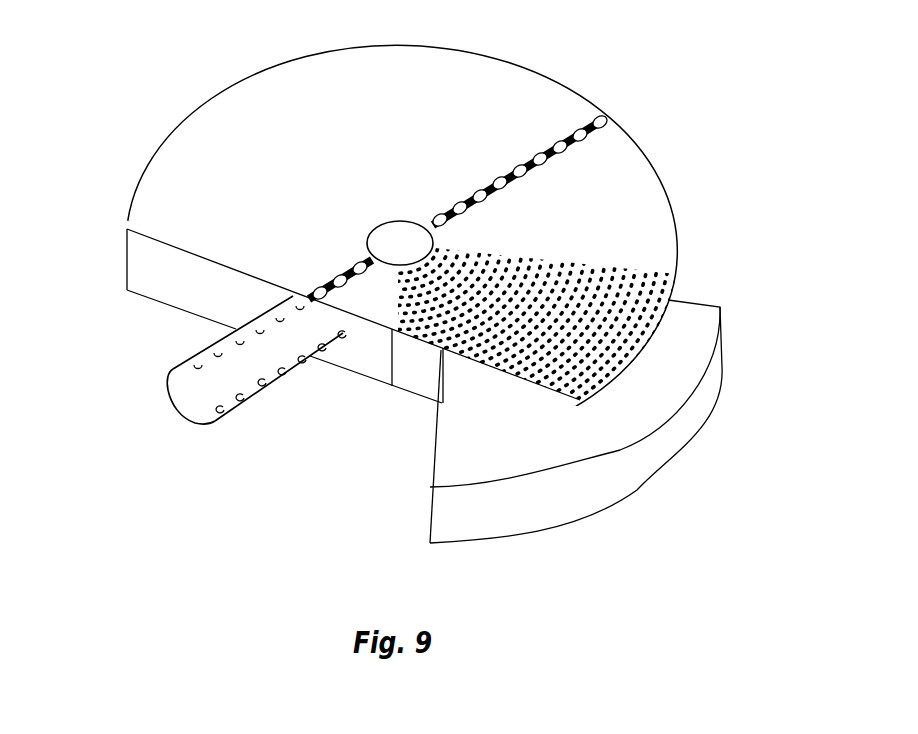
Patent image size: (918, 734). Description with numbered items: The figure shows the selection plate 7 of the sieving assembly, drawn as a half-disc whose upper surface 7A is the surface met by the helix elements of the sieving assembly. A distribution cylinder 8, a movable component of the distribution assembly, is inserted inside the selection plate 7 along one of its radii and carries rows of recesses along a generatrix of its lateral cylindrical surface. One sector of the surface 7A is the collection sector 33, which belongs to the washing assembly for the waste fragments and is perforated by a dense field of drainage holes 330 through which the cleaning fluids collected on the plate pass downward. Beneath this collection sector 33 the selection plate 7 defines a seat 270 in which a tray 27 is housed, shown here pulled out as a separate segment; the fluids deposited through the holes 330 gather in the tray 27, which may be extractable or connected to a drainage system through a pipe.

The selection plate 7 is at (161, 108).
The surface of the selection plate 7A is at (368, 157).
The distribution cylinder 8 is at (192, 430).
The tray 27 is at (553, 442).
The collection sector / drainage holes 33 is at (583, 308).
The holes 330 is at (583, 283).
The seat 270 is at (408, 372).